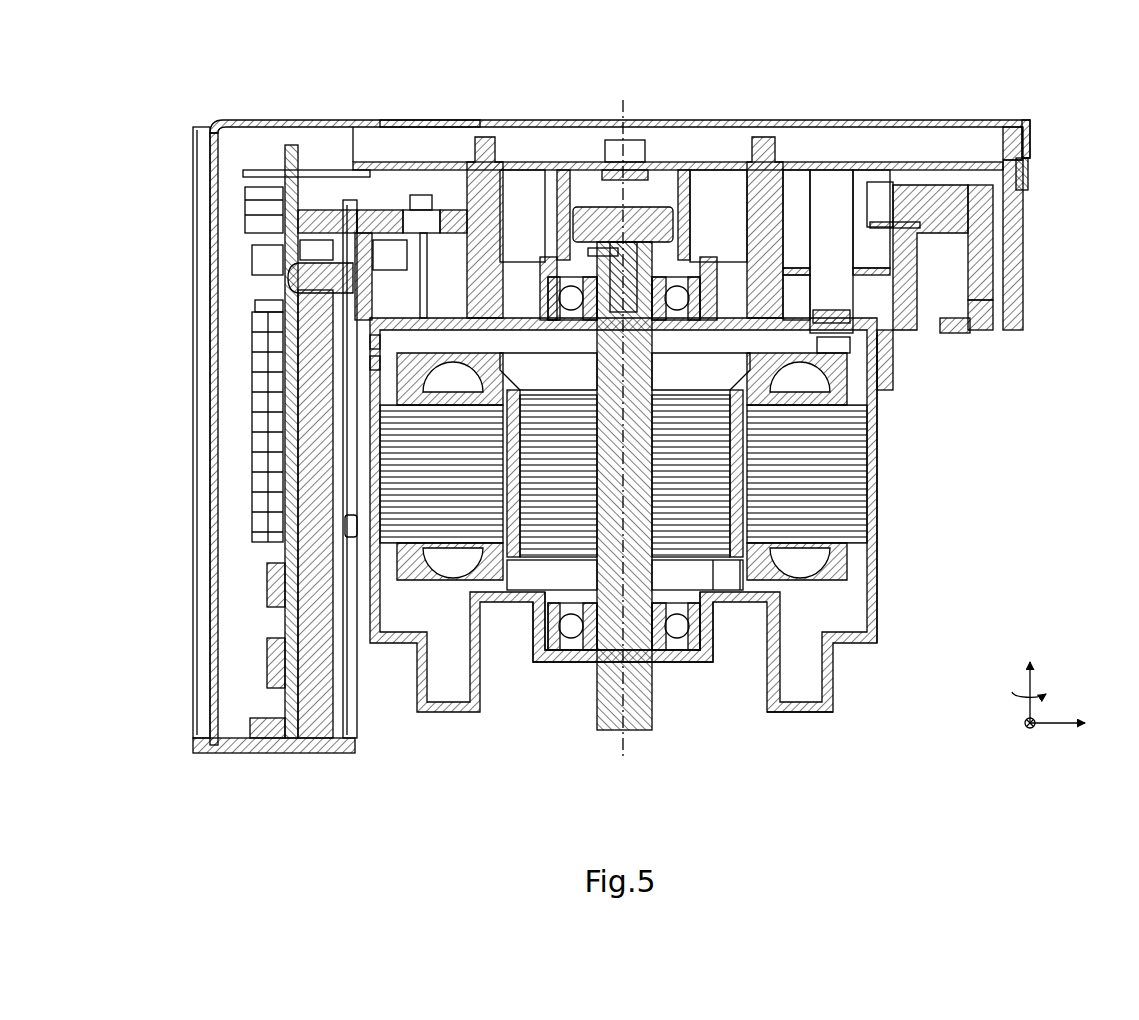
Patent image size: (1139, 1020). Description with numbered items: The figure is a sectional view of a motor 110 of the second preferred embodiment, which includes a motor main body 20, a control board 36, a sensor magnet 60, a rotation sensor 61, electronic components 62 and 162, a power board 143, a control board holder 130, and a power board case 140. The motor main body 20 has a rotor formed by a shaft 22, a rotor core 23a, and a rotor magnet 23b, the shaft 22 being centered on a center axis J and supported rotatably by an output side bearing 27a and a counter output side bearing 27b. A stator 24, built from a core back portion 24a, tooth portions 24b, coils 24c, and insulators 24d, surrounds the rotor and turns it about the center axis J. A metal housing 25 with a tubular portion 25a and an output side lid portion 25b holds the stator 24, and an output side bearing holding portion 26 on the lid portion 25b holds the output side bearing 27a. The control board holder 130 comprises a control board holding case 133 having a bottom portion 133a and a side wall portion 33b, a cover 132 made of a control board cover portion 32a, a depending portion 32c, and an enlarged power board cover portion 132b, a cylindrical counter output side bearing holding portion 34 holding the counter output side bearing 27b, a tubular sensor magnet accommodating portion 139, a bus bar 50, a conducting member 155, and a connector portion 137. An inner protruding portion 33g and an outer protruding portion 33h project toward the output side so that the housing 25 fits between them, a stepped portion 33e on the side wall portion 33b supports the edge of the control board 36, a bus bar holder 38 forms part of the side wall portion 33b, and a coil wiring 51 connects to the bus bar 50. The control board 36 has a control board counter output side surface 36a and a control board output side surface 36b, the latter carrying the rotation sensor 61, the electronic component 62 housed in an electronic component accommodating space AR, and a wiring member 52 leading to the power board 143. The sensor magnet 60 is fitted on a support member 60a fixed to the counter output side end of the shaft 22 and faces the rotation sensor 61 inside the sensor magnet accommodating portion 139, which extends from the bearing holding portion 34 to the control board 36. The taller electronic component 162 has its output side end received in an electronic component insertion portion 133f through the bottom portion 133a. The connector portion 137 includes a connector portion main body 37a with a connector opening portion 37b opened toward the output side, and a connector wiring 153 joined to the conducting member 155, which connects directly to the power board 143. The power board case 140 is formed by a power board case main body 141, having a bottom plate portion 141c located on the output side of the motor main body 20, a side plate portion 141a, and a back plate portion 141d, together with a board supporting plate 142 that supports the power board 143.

The motor main body 20 is at (679, 437).
The shaft 22 is at (612, 725).
The rotor core 23a is at (713, 580).
The rotor magnet 23b is at (740, 578).
The stator 24 is at (678, 481).
The core back portion 24a is at (858, 470).
The tooth portions 24b is at (840, 453).
The coils 24c is at (850, 575).
The insulators 24d is at (840, 385).
The housing 25 is at (679, 515).
The tubular portion 25a is at (873, 638).
The output side lid portion 25b is at (833, 688).
The output side bearing holding portion 26 is at (525, 637).
The output side bearing 27a is at (572, 630).
The counter output side bearing 27b is at (680, 298).
The control board cover portion 32a is at (426, 120).
The depending portion 32c is at (1011, 140).
The side wall portion 33b is at (1015, 260).
The stepped portion 33e is at (1010, 150).
The inner protruding portion 33g is at (385, 343).
The outer protruding portion 33h is at (380, 363).
The counter output side bearing holding portion 34 is at (878, 372).
The control board 36 is at (793, 267).
The control board counter output side surface 36a is at (548, 170).
The control board output side surface 36b is at (752, 170).
The connector portion main body 37a is at (993, 283).
The connector opening portion 37b is at (975, 300).
The bus bar holder 38 is at (352, 212).
The bus bar 50 is at (382, 212).
The coil wiring 51 is at (423, 245).
The wiring member 52 is at (310, 170).
The sensor magnet 60 is at (588, 207).
The support member 60a is at (598, 253).
The rotation sensor 61 is at (637, 210).
The electronic component 62 is at (519, 178).
The motor 110 is at (624, 455).
The control board holder 130 is at (1010, 223).
The cover 132 is at (656, 112).
The power board cover portion 132b is at (211, 141).
The control board holding case 133 is at (1030, 192).
The bottom portion 133a is at (450, 318).
The electronic component insertion portion 133f is at (850, 318).
The connector portion 137 is at (985, 333).
The sensor magnet accommodating portion 139 is at (693, 205).
The power board case 140 is at (290, 460).
The power board case main body 141 is at (290, 486).
The side plate portion 141a is at (206, 290).
The bottom plate portion 141c is at (228, 745).
The back plate portion 141d is at (343, 720).
The board supporting plate 142 is at (325, 688).
The power board 143 is at (284, 152).
The connector wiring 153 is at (945, 250).
The conducting member 155 is at (798, 240).
The electronic component 162 is at (843, 177).
The electronic component accommodating space AR is at (873, 240).
The center axis J is at (628, 732).